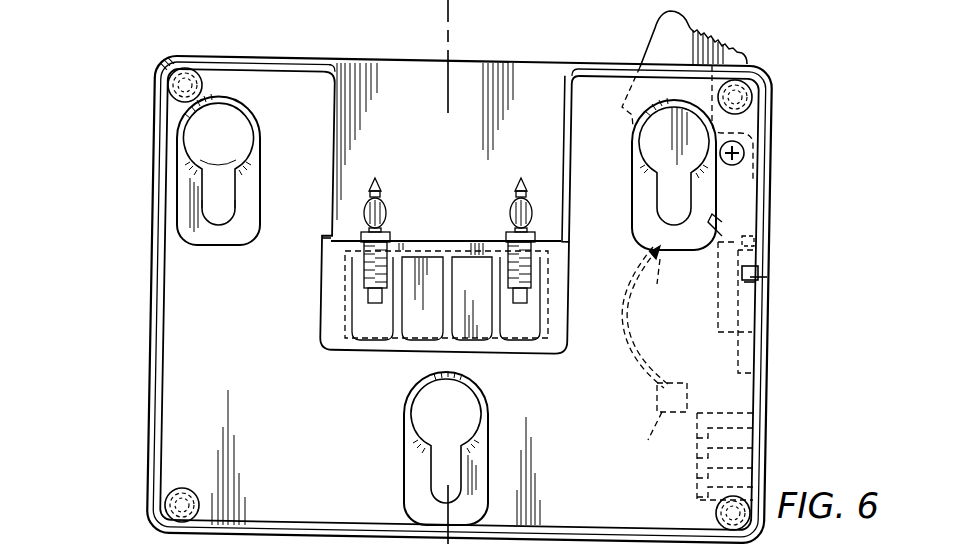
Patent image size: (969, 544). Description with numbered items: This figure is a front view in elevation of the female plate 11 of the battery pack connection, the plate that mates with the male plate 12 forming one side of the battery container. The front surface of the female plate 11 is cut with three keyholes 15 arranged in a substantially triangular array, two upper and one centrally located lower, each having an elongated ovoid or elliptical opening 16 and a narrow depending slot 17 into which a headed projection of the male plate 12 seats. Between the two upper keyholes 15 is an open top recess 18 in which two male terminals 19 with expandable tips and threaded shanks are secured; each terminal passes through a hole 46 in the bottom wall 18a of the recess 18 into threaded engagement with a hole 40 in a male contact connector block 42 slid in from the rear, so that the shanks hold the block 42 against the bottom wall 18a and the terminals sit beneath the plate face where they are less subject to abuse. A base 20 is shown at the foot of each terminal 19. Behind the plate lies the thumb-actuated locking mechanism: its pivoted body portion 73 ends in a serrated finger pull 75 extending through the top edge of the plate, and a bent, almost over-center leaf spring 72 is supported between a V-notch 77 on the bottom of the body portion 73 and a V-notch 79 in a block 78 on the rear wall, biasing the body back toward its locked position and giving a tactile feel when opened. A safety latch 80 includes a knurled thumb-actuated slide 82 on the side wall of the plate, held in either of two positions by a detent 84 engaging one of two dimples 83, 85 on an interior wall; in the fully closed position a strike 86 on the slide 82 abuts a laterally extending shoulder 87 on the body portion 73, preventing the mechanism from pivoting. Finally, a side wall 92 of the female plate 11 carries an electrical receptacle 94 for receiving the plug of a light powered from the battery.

The female plate 11 is at (183, 328).
The male plate 12 is at (468, 15).
The keyholes 15 is at (258, 114).
The elliptical opening 16 is at (245, 152).
The depending slot 17 is at (228, 203).
The open top recess 18 is at (543, 88).
The bottom wall 18a is at (322, 226).
The male terminals 19 is at (387, 203).
The fuse holder base 20 is at (392, 232).
The holes 40 is at (530, 290).
The male contact connector block 42 is at (410, 330).
The holes 46 is at (347, 253).
The leaf spring 72 is at (614, 342).
The body portion 73 is at (662, 35).
The serrated finger pull 75 is at (705, 37).
The V-notch 77 is at (673, 285).
The block 78 is at (647, 437).
The V-notch 79 is at (678, 383).
The safety latch 80 is at (775, 327).
The thumb-actuated slide 82 is at (760, 263).
The dimple 83 is at (762, 281).
The detent 84 is at (760, 272).
The dimple 85 is at (758, 238).
The strike 86 is at (718, 287).
The shoulder 87 is at (722, 222).
The side wall 92 is at (762, 386).
The electrical receptacle 94 is at (757, 440).